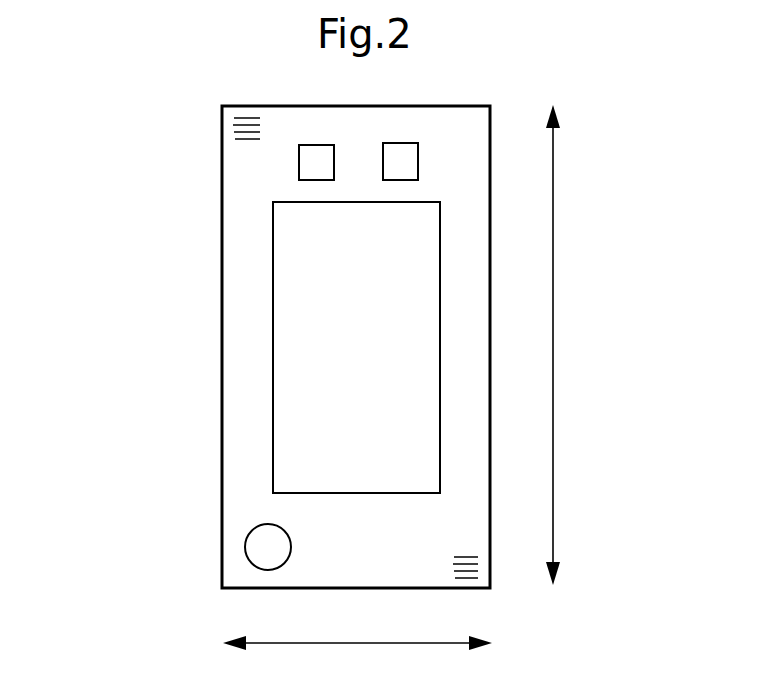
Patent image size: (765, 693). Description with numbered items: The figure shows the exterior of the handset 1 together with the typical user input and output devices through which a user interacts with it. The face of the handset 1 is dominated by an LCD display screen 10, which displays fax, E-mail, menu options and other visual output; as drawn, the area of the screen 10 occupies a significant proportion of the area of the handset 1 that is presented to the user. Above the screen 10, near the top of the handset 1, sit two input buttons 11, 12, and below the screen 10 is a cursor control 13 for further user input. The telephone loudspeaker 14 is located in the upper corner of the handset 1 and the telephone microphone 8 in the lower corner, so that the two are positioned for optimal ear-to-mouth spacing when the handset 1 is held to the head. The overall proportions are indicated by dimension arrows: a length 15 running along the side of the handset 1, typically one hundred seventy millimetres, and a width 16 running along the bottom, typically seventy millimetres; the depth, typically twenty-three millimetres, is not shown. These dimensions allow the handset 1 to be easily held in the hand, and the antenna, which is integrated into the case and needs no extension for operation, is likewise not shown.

The handset 1 is at (222, 313).
The telephone microphone 8 is at (467, 580).
The LCD display screen 10 is at (288, 436).
The input button 11 is at (312, 145).
The input button 12 is at (405, 143).
The cursor control 13 is at (246, 548).
The loudspeaker 14 is at (232, 129).
The length 15 is at (553, 347).
The width 16 is at (310, 645).